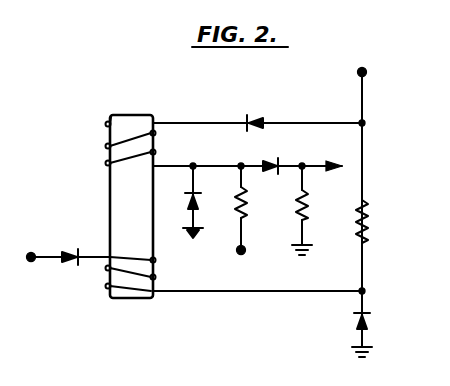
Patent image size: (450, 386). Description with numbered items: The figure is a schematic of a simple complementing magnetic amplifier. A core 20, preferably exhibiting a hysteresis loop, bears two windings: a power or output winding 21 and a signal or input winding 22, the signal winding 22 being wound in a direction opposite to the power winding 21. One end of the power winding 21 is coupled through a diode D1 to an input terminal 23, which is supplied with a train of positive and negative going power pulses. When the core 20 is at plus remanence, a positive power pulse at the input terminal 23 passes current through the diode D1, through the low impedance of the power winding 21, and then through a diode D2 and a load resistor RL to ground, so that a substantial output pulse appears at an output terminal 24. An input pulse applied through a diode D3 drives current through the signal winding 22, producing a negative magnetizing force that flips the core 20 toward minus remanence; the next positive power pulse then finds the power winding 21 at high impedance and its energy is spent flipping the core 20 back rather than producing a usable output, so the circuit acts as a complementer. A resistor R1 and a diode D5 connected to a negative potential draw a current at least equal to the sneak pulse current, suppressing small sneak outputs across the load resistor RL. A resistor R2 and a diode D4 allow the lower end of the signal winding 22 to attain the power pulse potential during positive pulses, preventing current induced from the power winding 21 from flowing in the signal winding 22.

The core 20 is at (147, 100).
The power winding 21 is at (105, 146).
The signal winding 22 is at (106, 286).
The input terminal 23 is at (368, 79).
The output terminal 24 is at (322, 164).
The diode D1 is at (250, 117).
The diode D2 is at (281, 165).
The diode D3 is at (78, 247).
The diode D4 is at (366, 308).
The diode D5 is at (188, 201).
The resistor R1 is at (245, 214).
The resistor R2 is at (368, 229).
The load resistor RL is at (305, 217).